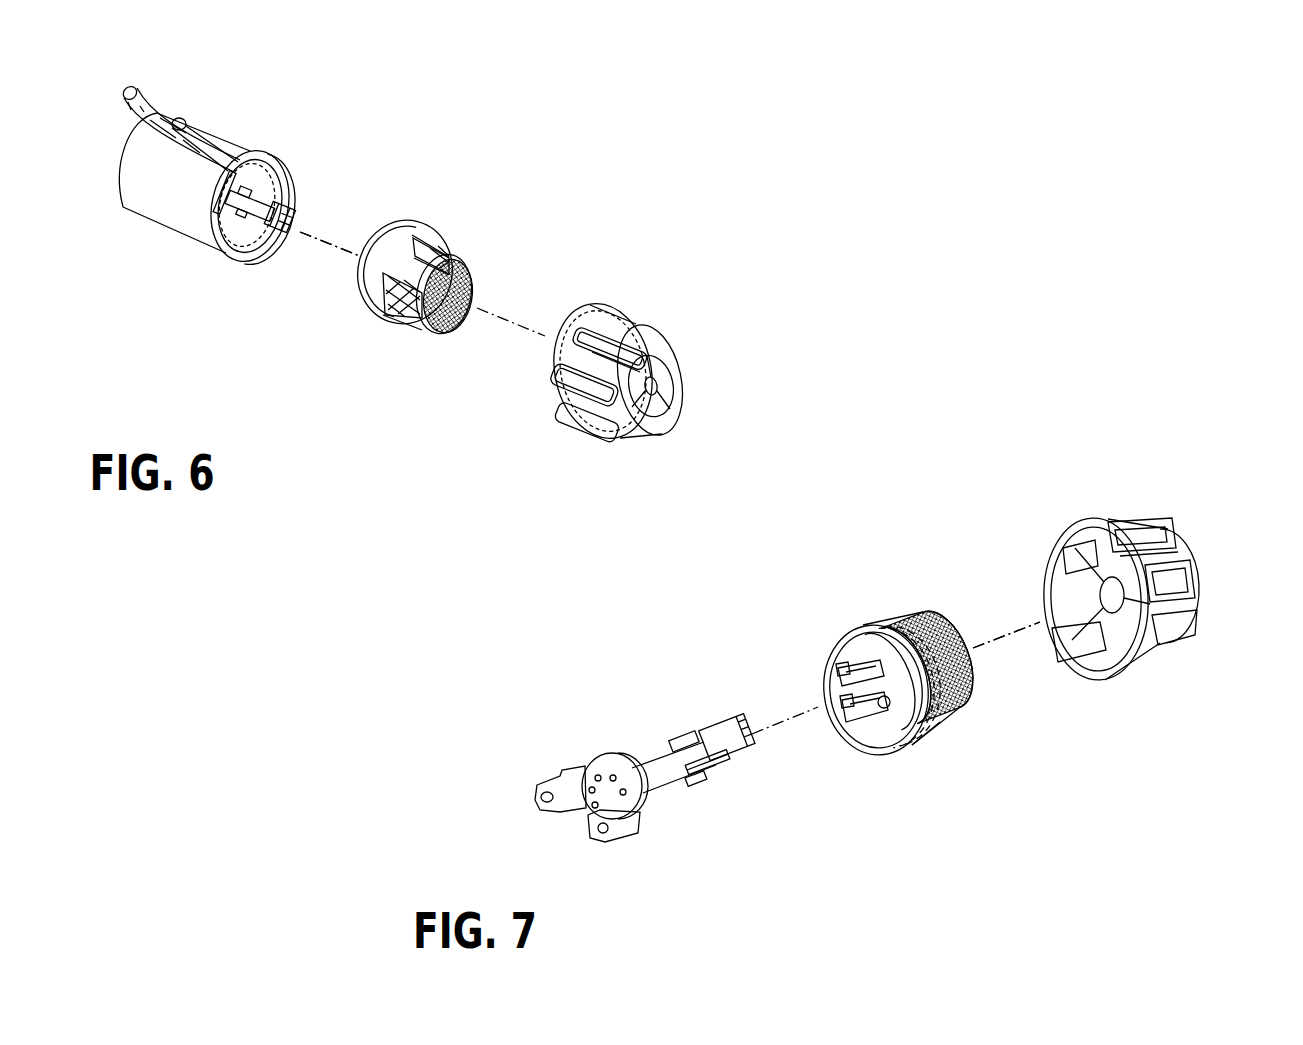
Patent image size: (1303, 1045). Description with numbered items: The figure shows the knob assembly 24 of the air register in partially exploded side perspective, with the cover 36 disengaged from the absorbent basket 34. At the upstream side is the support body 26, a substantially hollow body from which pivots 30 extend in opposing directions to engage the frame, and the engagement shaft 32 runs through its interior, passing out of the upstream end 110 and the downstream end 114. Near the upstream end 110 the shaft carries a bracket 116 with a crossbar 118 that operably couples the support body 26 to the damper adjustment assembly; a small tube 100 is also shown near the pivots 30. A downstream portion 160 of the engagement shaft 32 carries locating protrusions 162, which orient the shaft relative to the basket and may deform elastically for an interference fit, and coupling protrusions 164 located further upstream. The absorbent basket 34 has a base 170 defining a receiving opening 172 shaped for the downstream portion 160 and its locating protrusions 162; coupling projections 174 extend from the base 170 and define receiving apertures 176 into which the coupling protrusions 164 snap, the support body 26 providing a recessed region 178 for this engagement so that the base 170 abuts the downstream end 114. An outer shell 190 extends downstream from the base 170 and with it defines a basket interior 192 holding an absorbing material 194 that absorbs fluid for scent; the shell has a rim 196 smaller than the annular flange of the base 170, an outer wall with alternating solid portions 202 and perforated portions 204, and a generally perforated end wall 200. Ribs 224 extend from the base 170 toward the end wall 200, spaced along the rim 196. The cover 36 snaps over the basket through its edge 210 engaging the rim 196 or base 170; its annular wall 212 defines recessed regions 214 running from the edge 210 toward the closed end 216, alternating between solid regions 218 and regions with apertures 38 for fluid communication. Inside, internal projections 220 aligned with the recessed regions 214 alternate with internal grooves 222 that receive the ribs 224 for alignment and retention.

In FIG. 6, the knob assembly 24 is at (427, 118).
In FIG. 7, the knob assembly 24 is at (980, 466).
In FIG. 6, the support body 26 is at (221, 137).
In FIG. 6, the pivots 30 is at (180, 118).
In FIG. 6, the engagement shaft 32 is at (250, 228).
In FIG. 7, the engagement shaft 32 is at (657, 773).
In FIG. 6, the absorbent basket 34 is at (428, 240).
In FIG. 7, the absorbent basket 34 is at (903, 632).
In FIG. 6, the cover 36 is at (673, 344).
In FIG. 7, the cover 36 is at (1107, 527).
In FIG. 6, the apertures 38 is at (650, 334).
In FIG. 7, the apertures 38 is at (1167, 577).
In FIG. 6, the tube 100 is at (131, 87).
In FIG. 6, the upstream end 110 is at (118, 178).
In FIG. 6, the downstream end 114 is at (284, 168).
In FIG. 7, the bracket 116 is at (613, 838).
In FIG. 7, the crossbar 118 is at (600, 786).
In FIG. 6, the downstream portion 160 is at (252, 183).
In FIG. 7, the downstream portion 160 is at (728, 733).
In FIG. 6, the locating protrusions 162 is at (293, 207).
In FIG. 7, the locating protrusions 162 is at (748, 760).
In FIG. 6, the coupling protrusions 164 is at (222, 191).
In FIG. 7, the coupling protrusions 164 is at (688, 788).
In FIG. 6, the base 170 is at (397, 229).
In FIG. 7, the base 170 is at (830, 647).
In FIG. 7, the receiving opening 172 is at (907, 723).
In FIG. 6, the coupling projections 174 is at (362, 262).
In FIG. 7, the coupling projections 174 is at (850, 680).
In FIG. 7, the receiving apertures 176 is at (840, 687).
In FIG. 6, the recessed region 178 is at (224, 260).
In FIG. 6, the outer shell 190 is at (453, 257).
In FIG. 7, the outer shell 190 is at (937, 630).
In FIG. 6, the basket interior 192 is at (397, 308).
In FIG. 6, the absorbing material 194 is at (423, 318).
In FIG. 6, the rim 196 is at (444, 244).
In FIG. 7, the rim 196 is at (930, 707).
In FIG. 6, the end wall 200 is at (474, 287).
In FIG. 6, the solid portions 202 is at (458, 262).
In FIG. 7, the solid portions 202 is at (931, 627).
In FIG. 6, the perforated portions 204 is at (434, 241).
In FIG. 7, the perforated portions 204 is at (973, 663).
In FIG. 6, the edge 210 is at (553, 378).
In FIG. 7, the edge 210 is at (1093, 670).
In FIG. 6, the annular wall 212 is at (623, 324).
In FIG. 7, the annular wall 212 is at (1173, 553).
In FIG. 6, the recessed regions 214 is at (578, 337).
In FIG. 7, the recessed regions 214 is at (1160, 527).
In FIG. 6, the closed end 216 is at (663, 390).
In FIG. 6, the solid regions 218 is at (621, 353).
In FIG. 7, the solid regions 218 is at (1130, 537).
In FIG. 7, the internal projections 220 is at (1060, 580).
In FIG. 7, the internal grooves 222 is at (1060, 653).
In FIG. 7, the ribs 224 is at (918, 643).